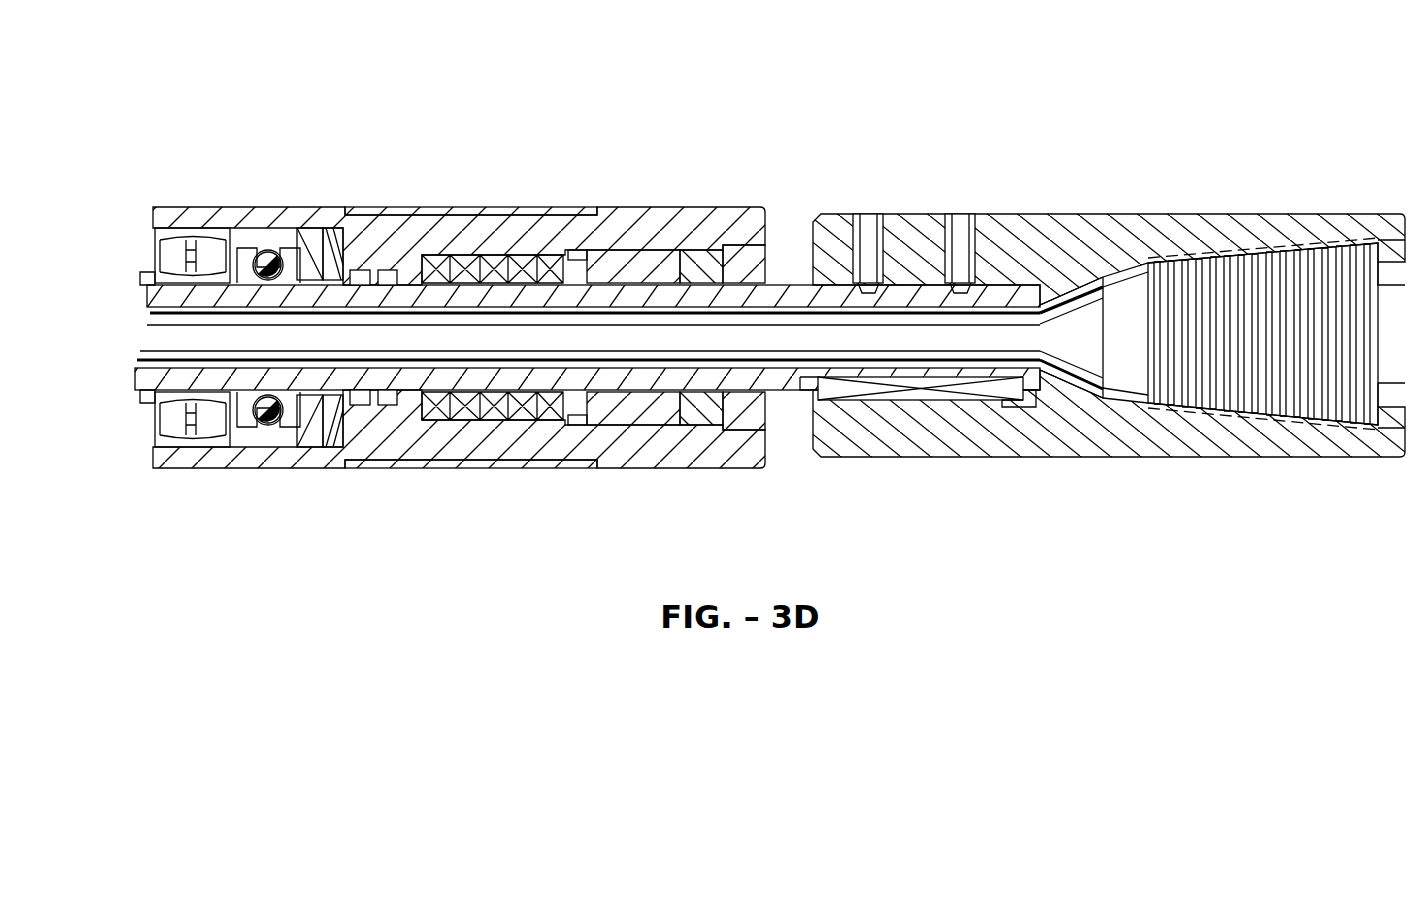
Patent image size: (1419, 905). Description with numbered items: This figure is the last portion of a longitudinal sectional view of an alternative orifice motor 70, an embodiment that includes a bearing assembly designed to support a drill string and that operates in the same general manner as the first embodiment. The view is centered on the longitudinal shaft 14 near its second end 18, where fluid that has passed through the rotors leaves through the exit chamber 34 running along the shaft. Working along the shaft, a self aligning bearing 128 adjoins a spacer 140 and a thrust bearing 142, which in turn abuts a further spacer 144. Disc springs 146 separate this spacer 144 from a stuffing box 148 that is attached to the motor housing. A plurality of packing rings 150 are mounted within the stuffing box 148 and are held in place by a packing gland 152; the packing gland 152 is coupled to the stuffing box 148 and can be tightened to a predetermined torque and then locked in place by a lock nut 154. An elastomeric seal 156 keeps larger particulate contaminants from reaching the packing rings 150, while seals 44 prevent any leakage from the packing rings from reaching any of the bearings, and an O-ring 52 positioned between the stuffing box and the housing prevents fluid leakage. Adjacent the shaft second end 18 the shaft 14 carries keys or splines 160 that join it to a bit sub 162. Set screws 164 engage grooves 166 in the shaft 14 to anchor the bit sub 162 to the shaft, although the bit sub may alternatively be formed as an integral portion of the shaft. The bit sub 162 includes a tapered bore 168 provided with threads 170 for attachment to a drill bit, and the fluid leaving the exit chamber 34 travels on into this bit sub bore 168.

The orifice motor 70 is at (420, 100).
The O-ring 52 is at (355, 222).
The set screws 164 is at (866, 228).
The tapered bore 168 is at (1310, 275).
The exit chamber 34 is at (187, 338).
The shaft 14 is at (705, 298).
The grooves 166 is at (870, 295).
The second end 18 is at (1046, 340).
The self aligning bearing 128 is at (199, 440).
The spacer 140 is at (245, 437).
The thrust bearing 142 is at (274, 432).
The spacer 144 is at (300, 440).
The disc springs 146 is at (340, 440).
The seals 44 is at (418, 442).
The packing rings 150 is at (530, 440).
The stuffing box 148 is at (617, 447).
The packing gland 152 is at (657, 447).
The lock nut 154 is at (700, 425).
The elastomeric seal 156 is at (773, 410).
The keys or splines 160 is at (945, 400).
The bit sub 162 is at (1090, 430).
The threads 170 is at (1320, 422).